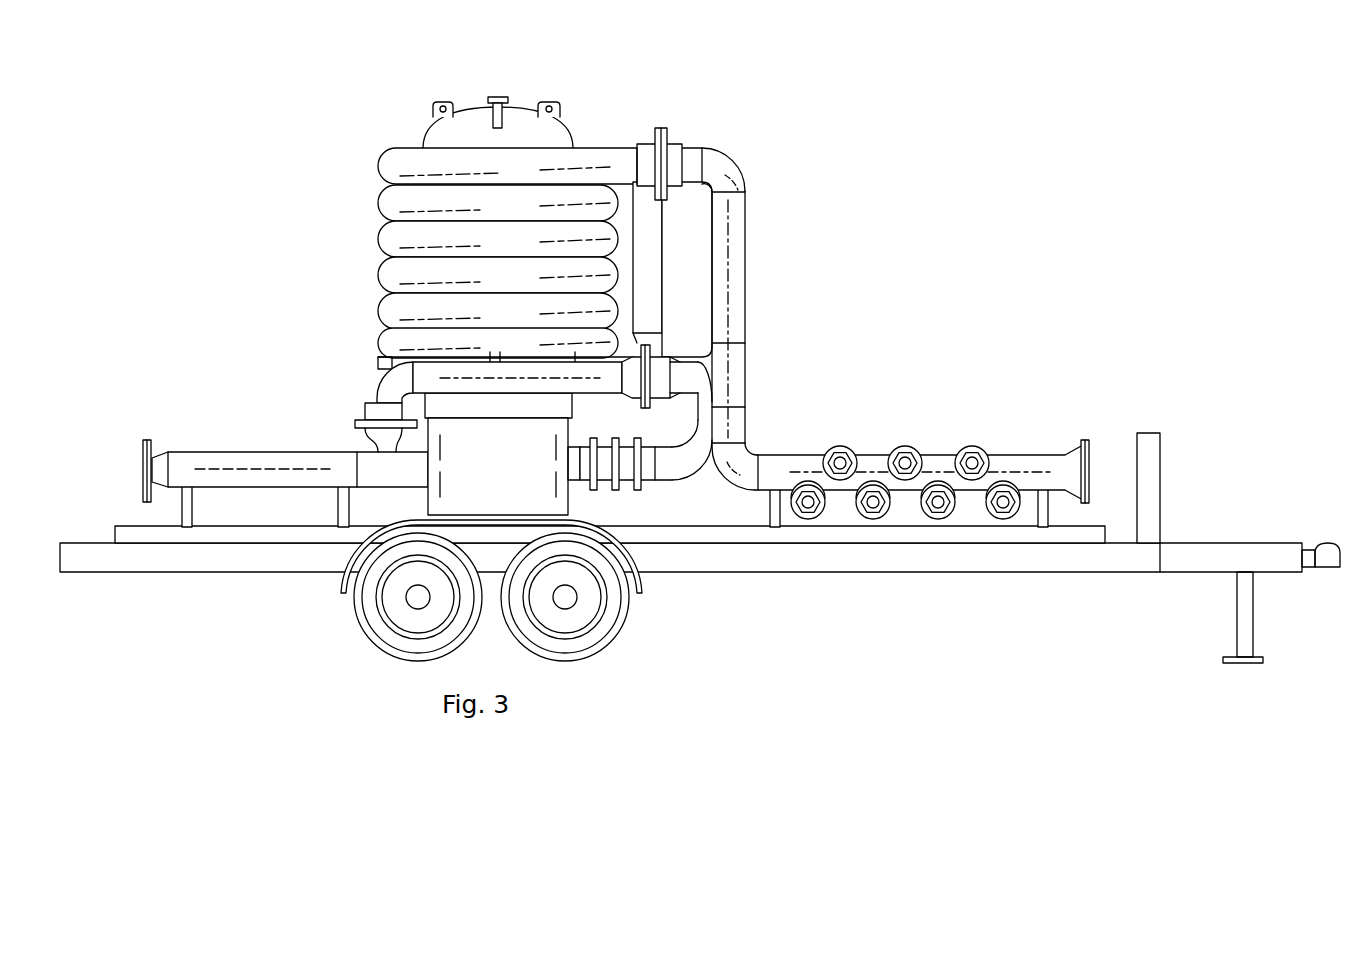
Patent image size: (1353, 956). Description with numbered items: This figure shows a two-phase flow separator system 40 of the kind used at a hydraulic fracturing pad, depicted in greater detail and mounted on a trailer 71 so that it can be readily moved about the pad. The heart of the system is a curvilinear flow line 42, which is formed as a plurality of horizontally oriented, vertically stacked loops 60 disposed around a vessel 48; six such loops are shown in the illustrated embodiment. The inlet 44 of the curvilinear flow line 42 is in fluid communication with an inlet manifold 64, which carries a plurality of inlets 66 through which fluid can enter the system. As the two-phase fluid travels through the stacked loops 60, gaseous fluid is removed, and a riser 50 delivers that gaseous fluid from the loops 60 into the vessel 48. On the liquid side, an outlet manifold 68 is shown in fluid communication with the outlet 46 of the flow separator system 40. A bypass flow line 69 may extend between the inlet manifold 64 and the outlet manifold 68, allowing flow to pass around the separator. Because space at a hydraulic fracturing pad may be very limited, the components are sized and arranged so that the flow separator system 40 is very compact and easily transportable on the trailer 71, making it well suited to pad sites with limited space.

The flow separator system 40 is at (644, 72).
The curvilinear flow line 42 is at (504, 212).
The inlet 44 is at (672, 145).
The outlet 46 is at (428, 500).
The vessel 48 is at (470, 106).
The riser 50 is at (720, 291).
The loops 60 is at (378, 173).
The inlet manifold 64 is at (797, 454).
The inlets 66 is at (972, 446).
The outlet manifold 68 is at (297, 452).
The bypass flow line 69 is at (492, 380).
The trailer 71 is at (238, 571).